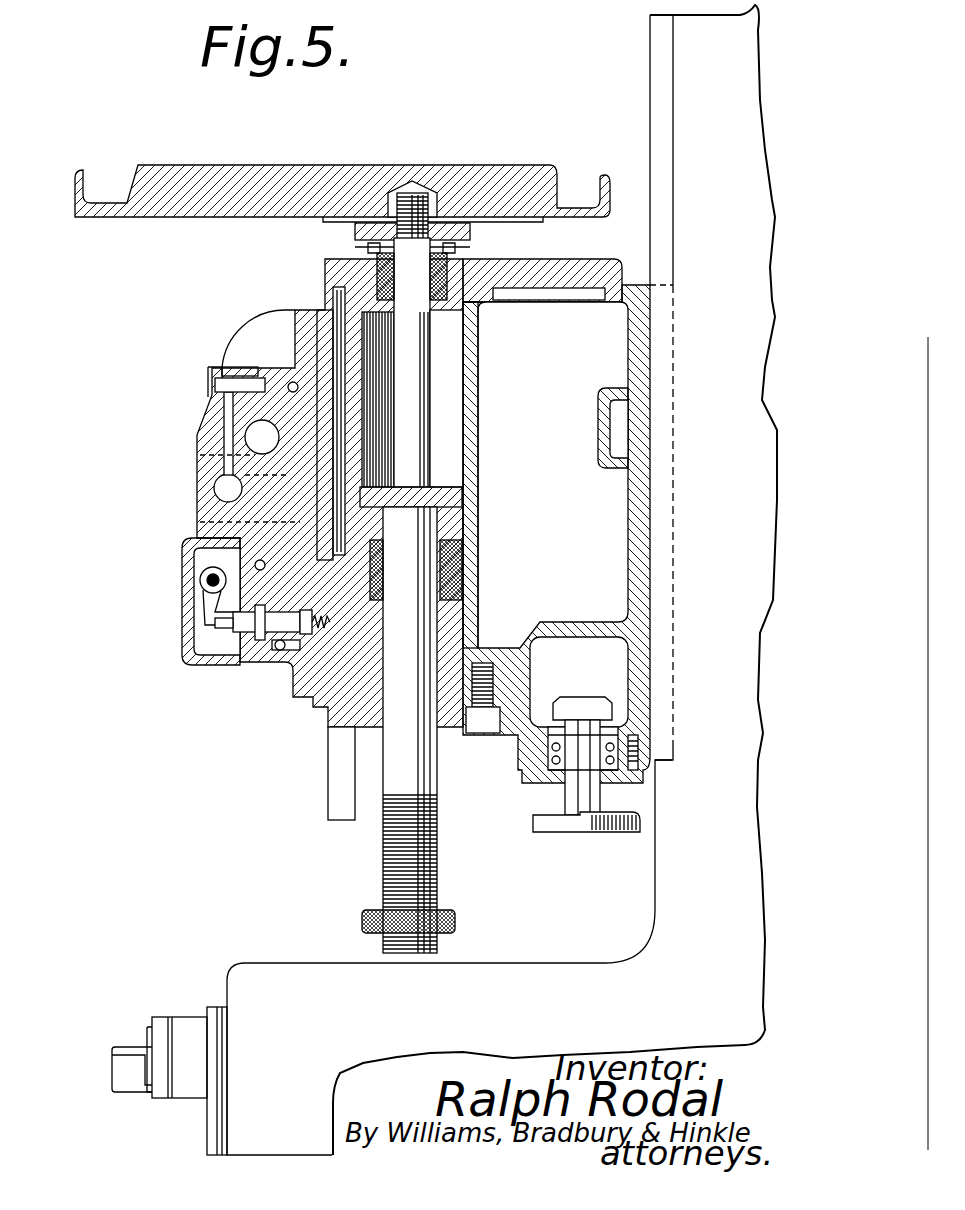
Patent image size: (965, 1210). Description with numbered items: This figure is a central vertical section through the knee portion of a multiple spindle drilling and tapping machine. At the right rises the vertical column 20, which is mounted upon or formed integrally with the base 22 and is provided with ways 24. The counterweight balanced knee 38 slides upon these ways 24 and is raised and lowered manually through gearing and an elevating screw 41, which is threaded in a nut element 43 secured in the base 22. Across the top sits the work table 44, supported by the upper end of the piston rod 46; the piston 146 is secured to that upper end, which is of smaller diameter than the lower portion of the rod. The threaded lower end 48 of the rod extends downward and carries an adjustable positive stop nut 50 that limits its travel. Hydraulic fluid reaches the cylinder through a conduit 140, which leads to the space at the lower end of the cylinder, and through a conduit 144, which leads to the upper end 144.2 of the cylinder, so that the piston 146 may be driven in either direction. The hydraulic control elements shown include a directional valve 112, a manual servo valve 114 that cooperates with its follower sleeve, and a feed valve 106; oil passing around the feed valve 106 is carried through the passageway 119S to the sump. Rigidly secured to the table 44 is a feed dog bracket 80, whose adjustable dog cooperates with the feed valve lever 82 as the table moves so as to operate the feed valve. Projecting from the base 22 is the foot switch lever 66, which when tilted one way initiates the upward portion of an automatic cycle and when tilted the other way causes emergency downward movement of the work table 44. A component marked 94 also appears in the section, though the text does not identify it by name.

The vertical column 20 is at (686, 72).
The ways 24 is at (662, 122).
The work table 44 is at (208, 218).
The conduit 144 is at (335, 305).
The retaining plate 94 is at (478, 256).
The upper end of the cylinder 144.2 is at (455, 326).
The directional valve 112 is at (220, 489).
The piston rod 46 is at (420, 440).
The piston 146 is at (445, 530).
The counterweight balanced knee 38 is at (640, 562).
The manual servo valve 114 is at (258, 432).
The conduit 140 is at (332, 471).
The feed valve lever 82 is at (212, 556).
The feed valve 106 is at (248, 652).
The passageway 119S is at (282, 670).
The lower end of the piston rod 48 is at (392, 763).
The feed dog bracket 80 is at (340, 805).
The elevating screw 41 is at (577, 793).
The nut element 43 is at (540, 821).
The adjustable positive stop nut 50 is at (362, 921).
The base 22 is at (248, 988).
The foot switch lever 66 is at (125, 1070).